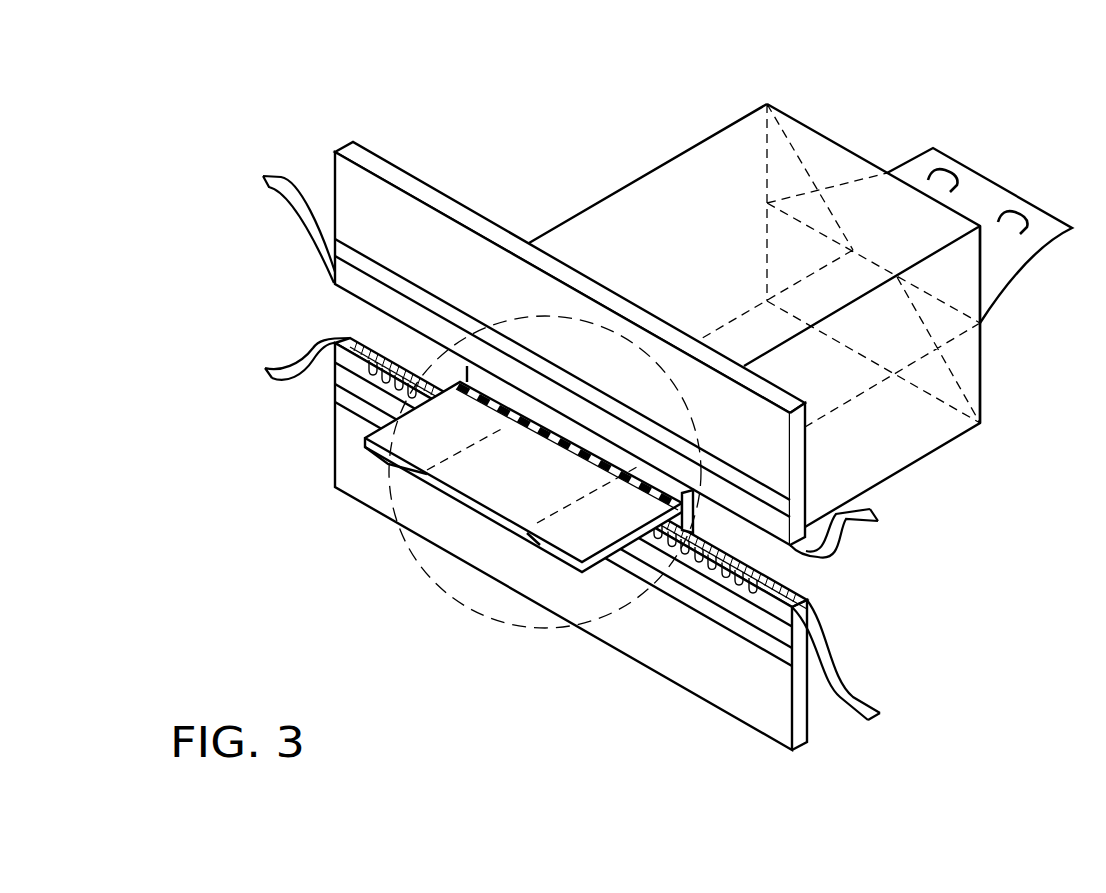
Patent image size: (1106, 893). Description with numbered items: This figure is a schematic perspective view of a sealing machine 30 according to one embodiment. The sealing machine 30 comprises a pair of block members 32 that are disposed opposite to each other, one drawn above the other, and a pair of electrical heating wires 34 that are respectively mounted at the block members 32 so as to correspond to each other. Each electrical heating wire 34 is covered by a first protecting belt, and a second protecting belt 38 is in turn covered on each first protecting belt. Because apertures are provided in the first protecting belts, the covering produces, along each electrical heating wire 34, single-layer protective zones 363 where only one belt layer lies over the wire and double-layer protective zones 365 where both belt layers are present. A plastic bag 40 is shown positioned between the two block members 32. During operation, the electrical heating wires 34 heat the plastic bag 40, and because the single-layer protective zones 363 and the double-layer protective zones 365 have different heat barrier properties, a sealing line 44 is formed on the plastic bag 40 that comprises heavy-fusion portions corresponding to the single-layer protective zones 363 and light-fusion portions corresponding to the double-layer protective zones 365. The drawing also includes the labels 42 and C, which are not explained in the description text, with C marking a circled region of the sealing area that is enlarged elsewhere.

The sealing machine 30 is at (336, 106).
The block member 32 is at (450, 207).
The electrical heating wire 34 is at (266, 176).
The second protecting belt 38 is at (777, 588).
The plastic bag 40 is at (800, 132).
The slot 42 is at (880, 388).
The sealing line 44 is at (566, 435).
The single-layer protective zone 363 is at (687, 550).
The double-layer protective zone 365 is at (717, 567).
The region C is at (478, 618).